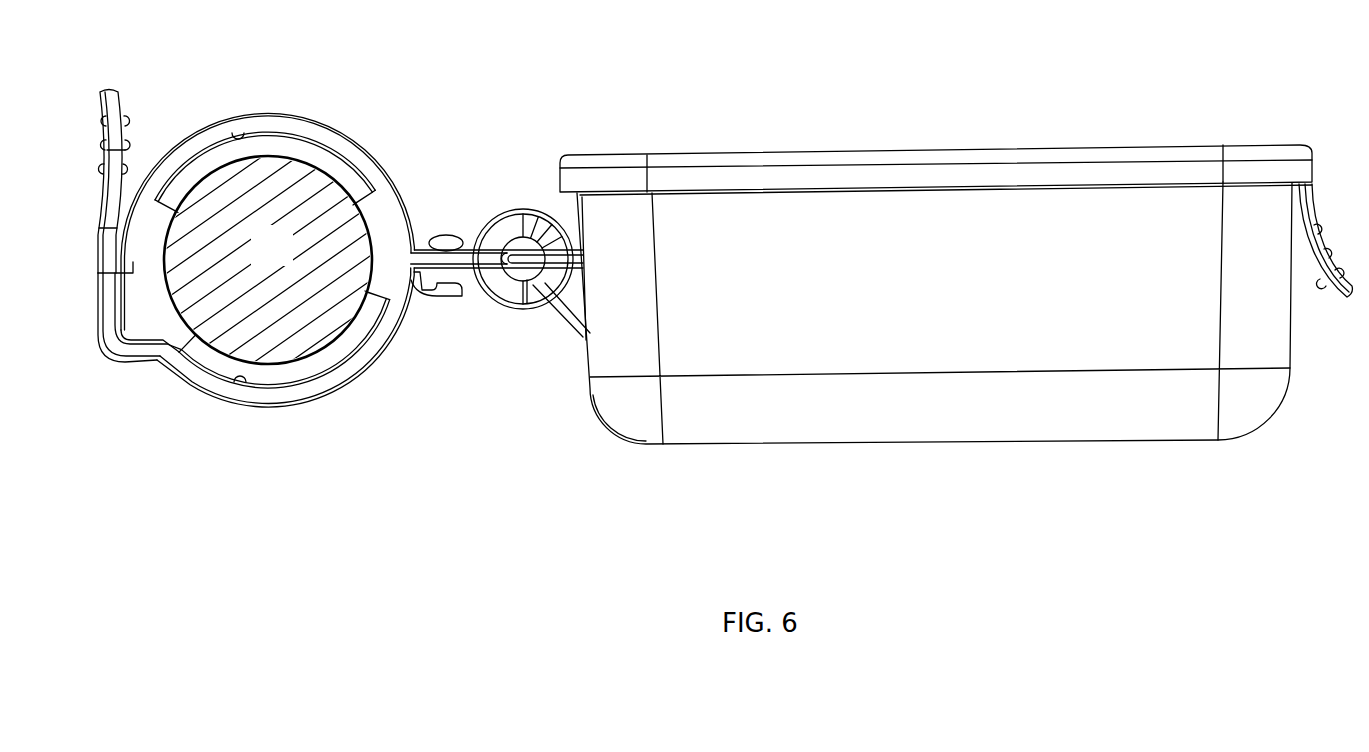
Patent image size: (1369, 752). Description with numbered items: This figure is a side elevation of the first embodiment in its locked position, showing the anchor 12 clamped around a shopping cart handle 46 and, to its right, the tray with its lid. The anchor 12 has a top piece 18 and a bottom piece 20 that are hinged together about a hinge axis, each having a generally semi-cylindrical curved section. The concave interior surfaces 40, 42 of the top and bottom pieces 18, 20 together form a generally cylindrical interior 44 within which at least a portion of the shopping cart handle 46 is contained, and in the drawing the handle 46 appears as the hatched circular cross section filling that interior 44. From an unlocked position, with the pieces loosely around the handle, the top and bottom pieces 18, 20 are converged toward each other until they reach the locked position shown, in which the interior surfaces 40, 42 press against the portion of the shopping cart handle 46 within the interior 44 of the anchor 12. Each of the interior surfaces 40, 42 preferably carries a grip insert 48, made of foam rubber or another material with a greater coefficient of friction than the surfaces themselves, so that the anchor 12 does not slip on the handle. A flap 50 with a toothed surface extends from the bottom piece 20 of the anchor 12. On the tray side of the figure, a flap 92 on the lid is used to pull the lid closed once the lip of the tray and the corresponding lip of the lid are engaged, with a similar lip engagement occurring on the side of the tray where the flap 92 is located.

The anchor 12 is at (172, 103).
The top piece 18 is at (262, 122).
The bottom piece 20 is at (302, 390).
The concave interior surface 40 is at (240, 138).
The concave interior surface 42 is at (234, 381).
The cylindrical interior 44 is at (155, 328).
The shopping cart handle 46 is at (286, 262).
The grip insert 48 is at (330, 162).
The flap 50 is at (112, 107).
The flap 92 is at (1313, 216).